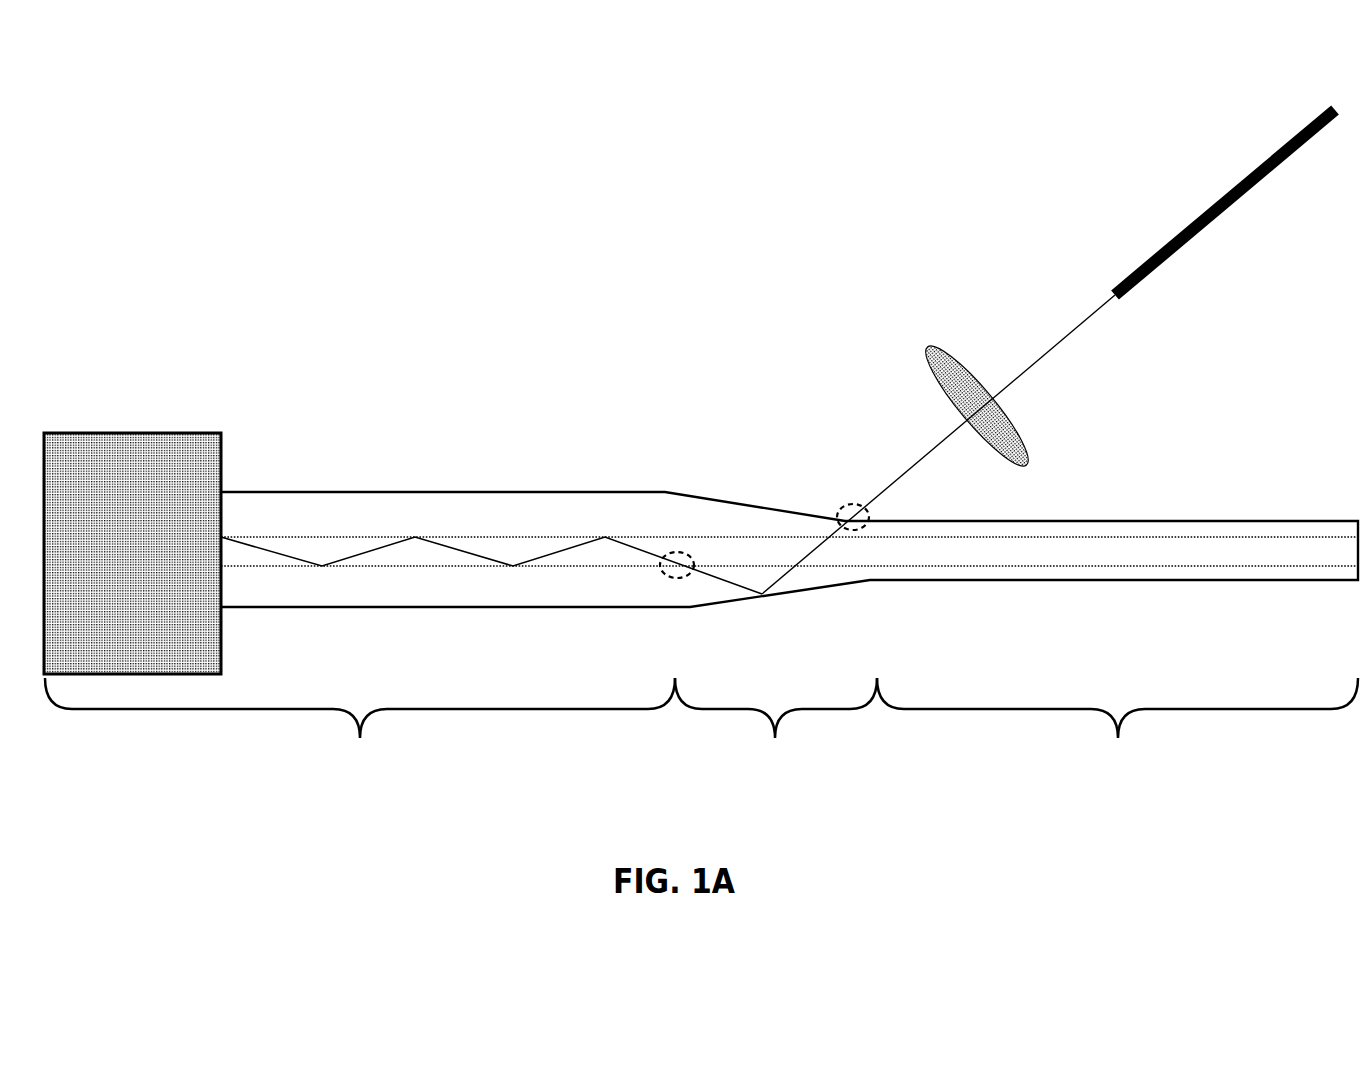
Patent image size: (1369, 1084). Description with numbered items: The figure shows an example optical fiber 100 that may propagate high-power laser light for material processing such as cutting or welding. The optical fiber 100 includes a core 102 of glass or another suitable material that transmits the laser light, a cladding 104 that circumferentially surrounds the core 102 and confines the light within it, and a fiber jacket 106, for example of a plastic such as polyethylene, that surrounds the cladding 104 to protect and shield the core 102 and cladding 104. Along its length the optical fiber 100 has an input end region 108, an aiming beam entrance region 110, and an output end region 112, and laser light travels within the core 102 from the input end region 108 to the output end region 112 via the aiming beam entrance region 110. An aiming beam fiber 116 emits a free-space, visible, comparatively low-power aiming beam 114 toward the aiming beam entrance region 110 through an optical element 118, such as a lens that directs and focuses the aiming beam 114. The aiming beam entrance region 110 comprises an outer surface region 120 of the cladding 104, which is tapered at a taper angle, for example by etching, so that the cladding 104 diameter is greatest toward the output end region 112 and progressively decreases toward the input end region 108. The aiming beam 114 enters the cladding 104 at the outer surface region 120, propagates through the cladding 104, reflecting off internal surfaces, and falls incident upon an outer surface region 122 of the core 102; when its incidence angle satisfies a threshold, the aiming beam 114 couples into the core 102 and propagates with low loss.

The optical fiber 100 is at (238, 328).
The core 102 is at (437, 578).
The cladding 104 is at (472, 508).
The fiber jacket 106 is at (164, 449).
The input end region 108 is at (1117, 724).
The aiming beam entrance region 110 is at (776, 724).
The output end region 112 is at (360, 724).
The aiming beam 114 is at (876, 467).
The aiming beam fiber 116 is at (1192, 278).
The optical element 118 is at (1042, 425).
The outer surface region of the cladding 120 is at (828, 495).
The outer surface region of the core 122 is at (689, 595).